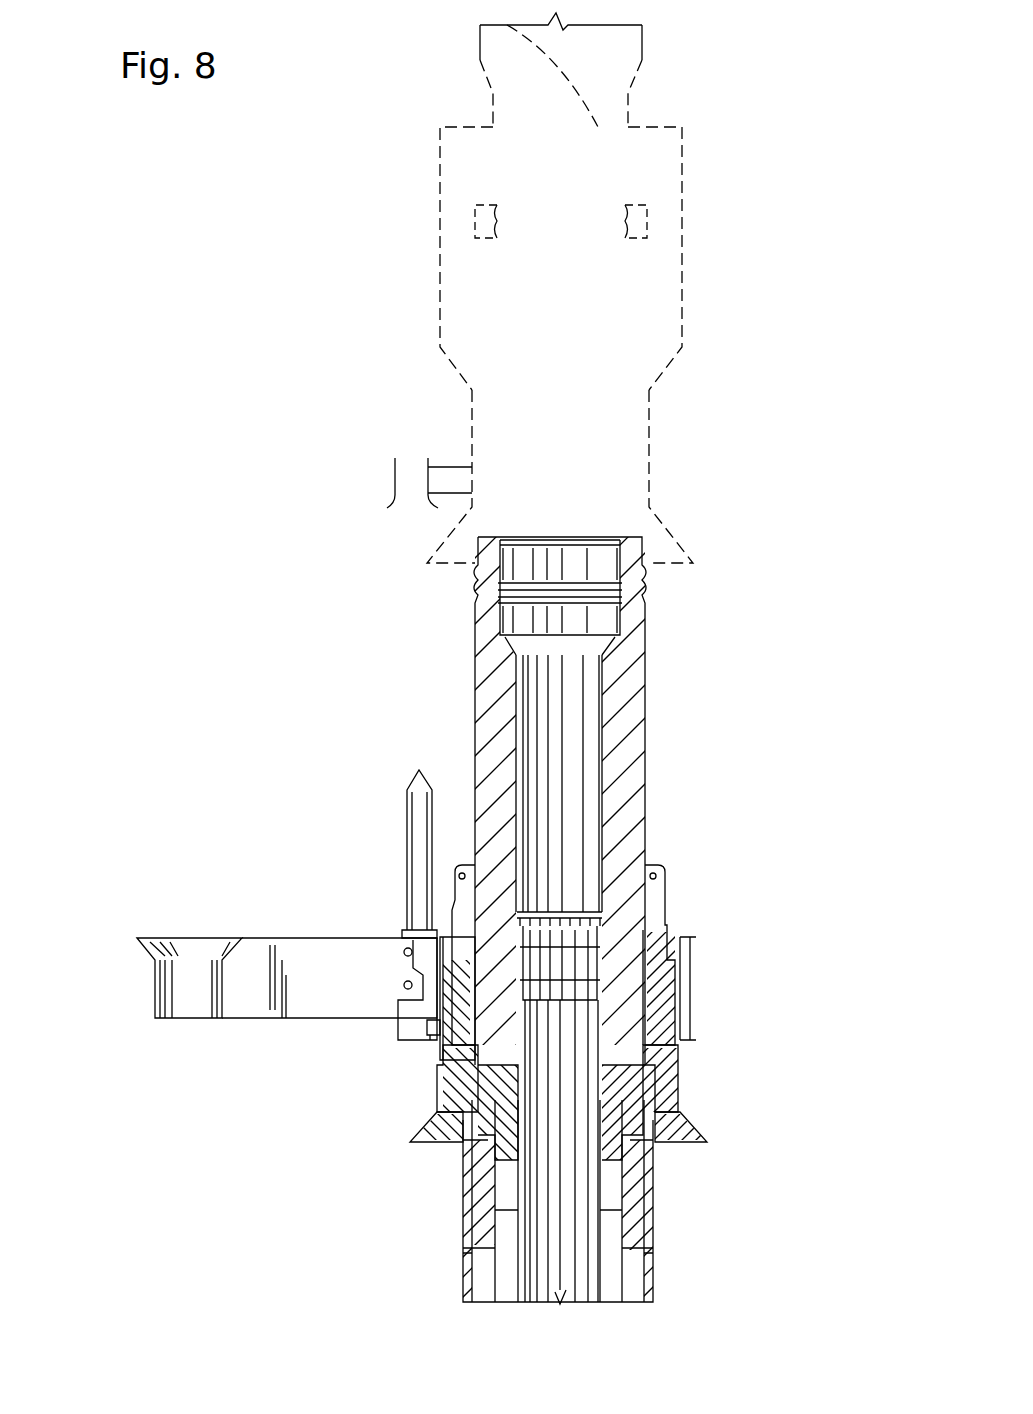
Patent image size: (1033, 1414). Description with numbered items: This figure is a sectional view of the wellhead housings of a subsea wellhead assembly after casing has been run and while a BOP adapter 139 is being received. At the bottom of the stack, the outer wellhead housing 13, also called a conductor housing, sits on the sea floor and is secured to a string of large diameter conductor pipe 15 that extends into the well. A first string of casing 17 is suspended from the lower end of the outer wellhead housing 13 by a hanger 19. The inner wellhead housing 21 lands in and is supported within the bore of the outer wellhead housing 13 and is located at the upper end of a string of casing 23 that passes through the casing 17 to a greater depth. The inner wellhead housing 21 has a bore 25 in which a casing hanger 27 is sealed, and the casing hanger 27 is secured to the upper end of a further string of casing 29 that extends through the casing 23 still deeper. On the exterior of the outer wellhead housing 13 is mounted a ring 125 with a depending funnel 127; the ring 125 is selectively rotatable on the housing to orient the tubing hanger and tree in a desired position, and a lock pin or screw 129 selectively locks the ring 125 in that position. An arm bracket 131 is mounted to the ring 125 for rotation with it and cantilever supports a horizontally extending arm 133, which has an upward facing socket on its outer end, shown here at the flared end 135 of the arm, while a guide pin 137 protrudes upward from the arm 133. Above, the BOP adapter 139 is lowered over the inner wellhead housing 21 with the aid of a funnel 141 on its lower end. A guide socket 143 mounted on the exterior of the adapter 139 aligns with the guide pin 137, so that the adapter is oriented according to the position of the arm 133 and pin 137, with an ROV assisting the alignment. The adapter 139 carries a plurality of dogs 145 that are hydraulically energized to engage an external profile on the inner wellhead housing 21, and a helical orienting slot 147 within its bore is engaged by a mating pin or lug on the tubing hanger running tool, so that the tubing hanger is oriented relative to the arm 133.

The helical orienting slot 147 is at (527, 42).
The dogs 145 is at (476, 219).
The BOP adapter 139 is at (440, 300).
The guide socket 143 is at (393, 477).
The funnel 141 is at (688, 534).
The inner wellhead housing 21 is at (638, 807).
The bore 25 is at (570, 712).
The casing hanger 27 is at (593, 993).
The outer wellhead housing 13 is at (658, 1012).
The ring 125 is at (682, 1073).
The funnel 127 is at (693, 1120).
The hanger 19 is at (645, 1158).
The string of casing 23 is at (517, 1232).
The first string of casing 17 is at (625, 1232).
The conductor pipe 15 is at (657, 1267).
The string of casing 29 is at (593, 1280).
The guide pin 137 is at (405, 820).
The arm 133 is at (345, 937).
The flared socket 135 is at (143, 958).
The arm bracket 131 is at (410, 1032).
The lock pin or screw 129 is at (432, 1045).